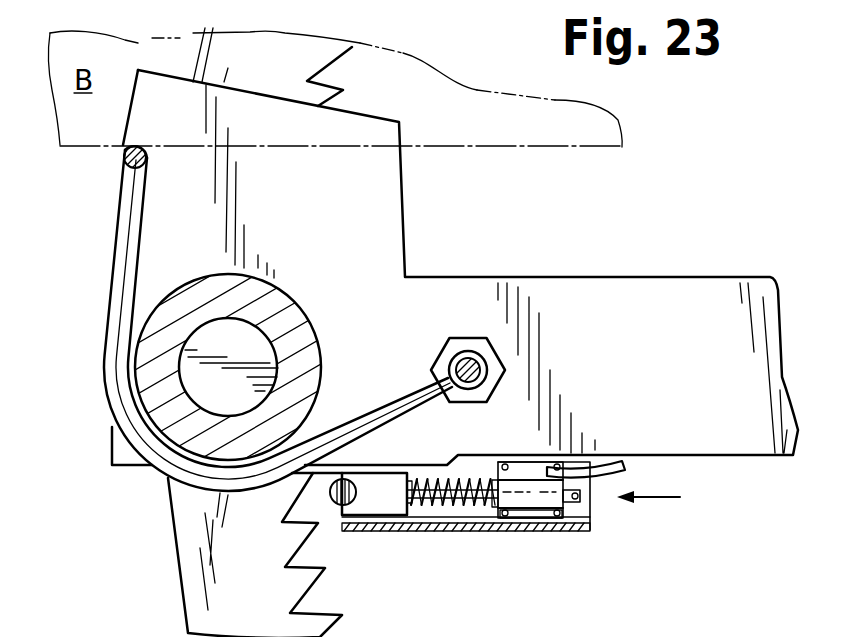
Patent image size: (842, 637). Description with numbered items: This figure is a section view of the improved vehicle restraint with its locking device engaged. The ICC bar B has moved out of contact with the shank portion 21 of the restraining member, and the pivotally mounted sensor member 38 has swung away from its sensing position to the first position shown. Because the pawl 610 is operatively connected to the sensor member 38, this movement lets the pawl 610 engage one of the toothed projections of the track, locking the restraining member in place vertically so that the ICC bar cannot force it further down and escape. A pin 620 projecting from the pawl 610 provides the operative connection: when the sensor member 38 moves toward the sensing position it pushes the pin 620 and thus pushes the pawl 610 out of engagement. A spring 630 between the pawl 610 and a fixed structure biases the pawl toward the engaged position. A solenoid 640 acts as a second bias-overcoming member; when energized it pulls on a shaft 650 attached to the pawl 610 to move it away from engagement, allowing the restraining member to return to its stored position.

The shank portion 21 is at (220, 340).
The sensor member 38 is at (112, 330).
The pawl member 610 is at (390, 499).
The pin 620 is at (355, 502).
The spring 630 is at (462, 508).
The solenoid 640 is at (535, 515).
The shaft 650 is at (580, 498).